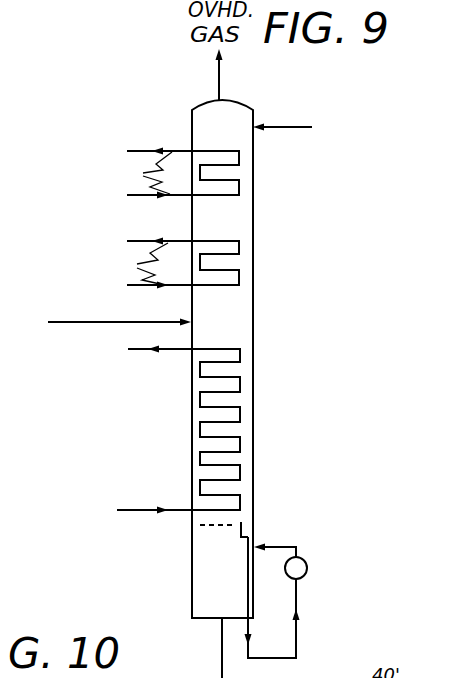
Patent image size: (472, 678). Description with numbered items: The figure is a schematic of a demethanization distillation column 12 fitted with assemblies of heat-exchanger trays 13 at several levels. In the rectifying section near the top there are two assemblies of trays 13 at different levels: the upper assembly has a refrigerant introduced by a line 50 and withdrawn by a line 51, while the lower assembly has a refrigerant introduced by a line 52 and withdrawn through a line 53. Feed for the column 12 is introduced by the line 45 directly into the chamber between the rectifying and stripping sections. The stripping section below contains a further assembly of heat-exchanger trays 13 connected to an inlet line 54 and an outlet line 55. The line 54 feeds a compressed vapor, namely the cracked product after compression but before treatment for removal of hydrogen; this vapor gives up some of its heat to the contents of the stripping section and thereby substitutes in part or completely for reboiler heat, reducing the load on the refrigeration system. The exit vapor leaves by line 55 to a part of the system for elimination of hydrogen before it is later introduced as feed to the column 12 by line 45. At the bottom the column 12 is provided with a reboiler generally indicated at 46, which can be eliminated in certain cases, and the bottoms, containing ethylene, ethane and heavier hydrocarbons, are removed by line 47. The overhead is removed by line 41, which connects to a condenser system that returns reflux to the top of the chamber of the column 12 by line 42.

The demethanization distillation column 12 is at (259, 107).
The heat-exchanger trays 13 is at (232, 172).
The overhead line 41 is at (217, 72).
The reflux line 42 is at (298, 128).
The feed line 45 is at (92, 324).
The reboiler 46 is at (308, 552).
The bottoms line 47 is at (222, 644).
The refrigerant inlet line 50 is at (133, 204).
The refrigerant withdrawal line 51 is at (172, 149).
The refrigerant inlet line 52 is at (172, 284).
The refrigerant withdrawal line 53 is at (175, 240).
The inlet line 54 is at (148, 514).
The outlet line 55 is at (168, 351).